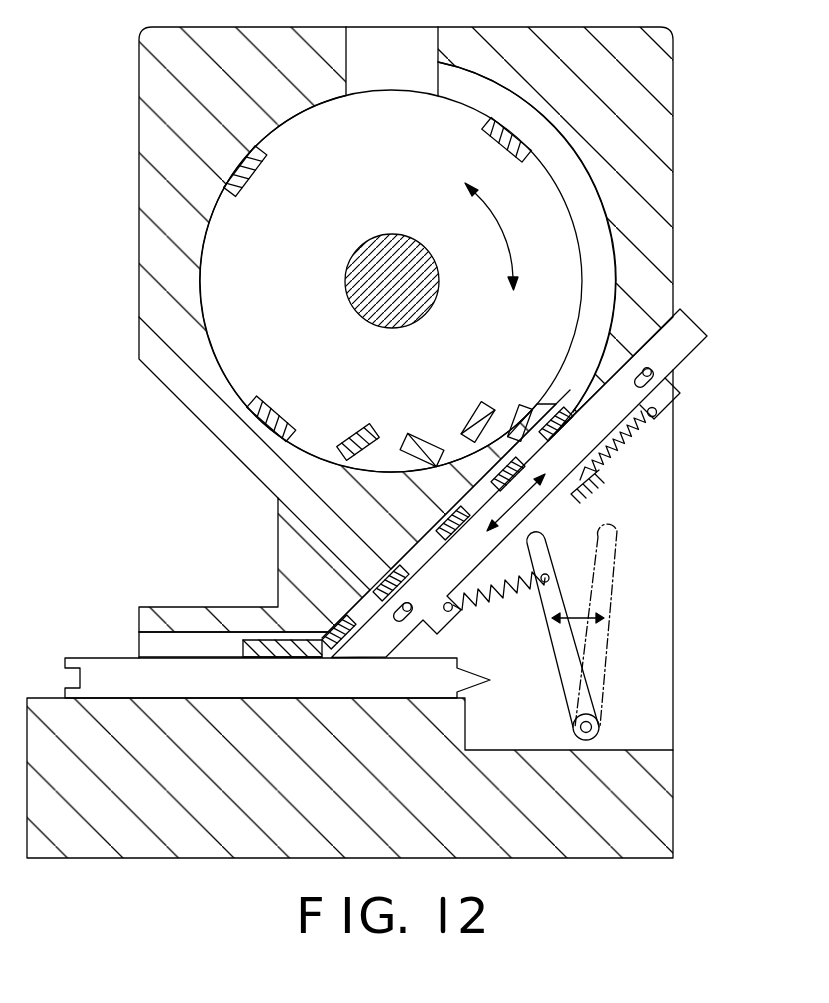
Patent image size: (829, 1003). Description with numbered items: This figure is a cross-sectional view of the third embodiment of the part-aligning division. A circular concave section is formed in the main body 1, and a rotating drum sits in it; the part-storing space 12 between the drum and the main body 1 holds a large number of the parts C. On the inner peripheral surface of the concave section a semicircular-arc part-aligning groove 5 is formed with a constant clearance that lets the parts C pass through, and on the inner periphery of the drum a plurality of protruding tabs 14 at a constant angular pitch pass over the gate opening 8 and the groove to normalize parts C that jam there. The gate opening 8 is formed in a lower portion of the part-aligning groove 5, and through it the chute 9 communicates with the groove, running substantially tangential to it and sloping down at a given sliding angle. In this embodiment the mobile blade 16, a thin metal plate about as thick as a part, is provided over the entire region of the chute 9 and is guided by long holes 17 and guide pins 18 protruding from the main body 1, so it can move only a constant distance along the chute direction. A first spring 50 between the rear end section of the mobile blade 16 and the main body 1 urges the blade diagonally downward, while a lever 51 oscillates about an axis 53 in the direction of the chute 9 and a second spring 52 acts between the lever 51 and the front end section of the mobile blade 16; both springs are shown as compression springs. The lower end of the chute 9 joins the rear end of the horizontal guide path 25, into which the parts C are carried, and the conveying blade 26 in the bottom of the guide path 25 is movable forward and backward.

The main body 1 is at (150, 236).
The part-aligning groove 5 is at (598, 247).
The gate opening 8 is at (500, 442).
The chute 9 is at (418, 557).
The part-storing space 12 is at (404, 188).
The protruding tabs 14 is at (252, 176).
The mobile blade 16 is at (546, 487).
The long holes 17 is at (672, 387).
The guide pins 18 is at (656, 373).
The horizontal guide path 25 is at (192, 640).
The conveying blade 26 is at (107, 668).
The first spring 50 is at (640, 443).
The lever 51 is at (574, 657).
The second spring 52 is at (497, 596).
The axis 53 is at (605, 728).
The parts C is at (362, 425).